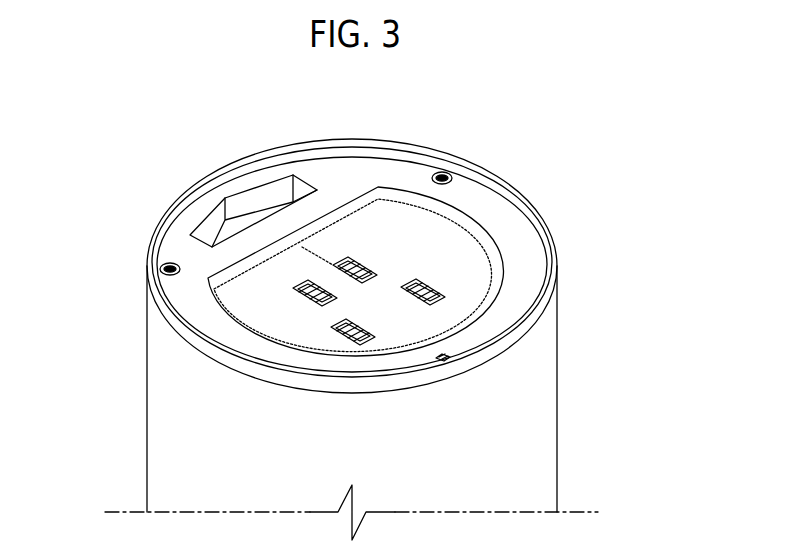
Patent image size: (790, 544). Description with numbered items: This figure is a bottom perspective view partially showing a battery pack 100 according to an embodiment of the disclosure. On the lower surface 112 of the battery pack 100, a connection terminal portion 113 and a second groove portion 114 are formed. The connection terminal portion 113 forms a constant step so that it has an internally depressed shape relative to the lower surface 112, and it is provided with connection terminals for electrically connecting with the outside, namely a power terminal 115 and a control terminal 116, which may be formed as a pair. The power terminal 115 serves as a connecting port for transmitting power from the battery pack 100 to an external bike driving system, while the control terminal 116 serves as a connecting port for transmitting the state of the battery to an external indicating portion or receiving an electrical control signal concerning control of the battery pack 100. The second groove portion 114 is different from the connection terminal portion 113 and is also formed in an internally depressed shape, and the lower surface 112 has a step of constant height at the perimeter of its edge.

The battery pack 100 is at (588, 88).
The lower surface 112 is at (347, 173).
The connection terminal portion 113 is at (437, 240).
The second groove portion 114 is at (245, 207).
The power terminal 115 is at (330, 337).
The control terminal 116 is at (378, 322).